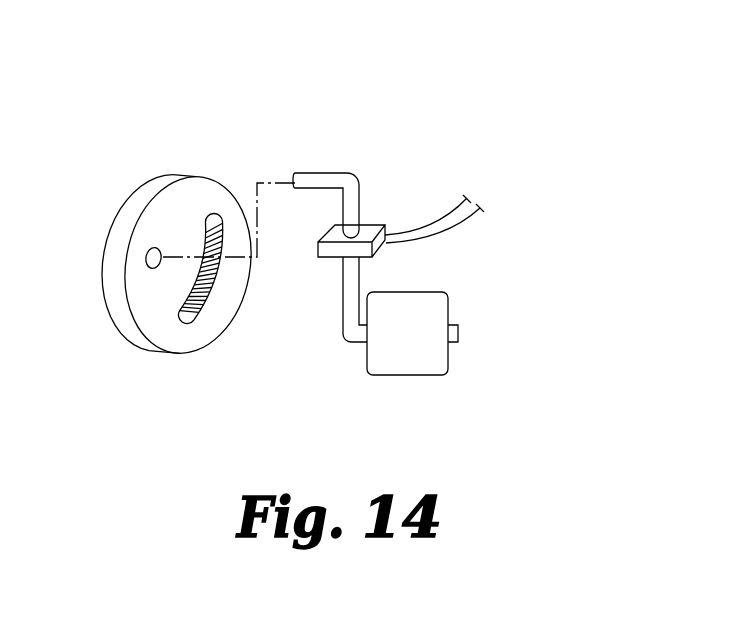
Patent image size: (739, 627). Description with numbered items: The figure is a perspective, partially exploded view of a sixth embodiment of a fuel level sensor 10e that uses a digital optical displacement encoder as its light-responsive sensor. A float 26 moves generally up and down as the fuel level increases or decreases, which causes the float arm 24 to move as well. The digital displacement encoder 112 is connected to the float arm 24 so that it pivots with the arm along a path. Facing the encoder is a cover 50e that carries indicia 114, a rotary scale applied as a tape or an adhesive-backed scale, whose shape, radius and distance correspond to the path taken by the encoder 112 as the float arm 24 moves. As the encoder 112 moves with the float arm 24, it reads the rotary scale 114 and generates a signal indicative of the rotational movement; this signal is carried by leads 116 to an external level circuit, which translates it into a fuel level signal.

The fuel level sensor 10e is at (260, 118).
The cover 50e is at (162, 323).
The indicia 114 is at (196, 321).
The float arm 24 is at (362, 196).
The digital displacement encoder 112 is at (366, 254).
The leads 116 is at (427, 221).
The float 26 is at (408, 365).